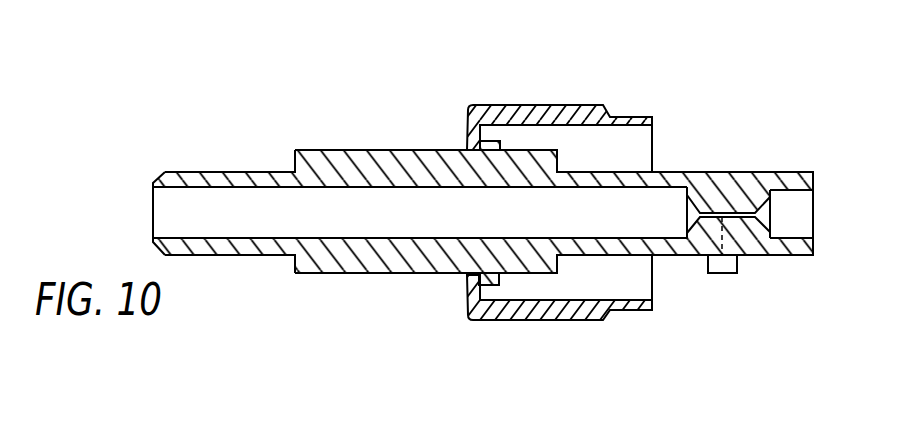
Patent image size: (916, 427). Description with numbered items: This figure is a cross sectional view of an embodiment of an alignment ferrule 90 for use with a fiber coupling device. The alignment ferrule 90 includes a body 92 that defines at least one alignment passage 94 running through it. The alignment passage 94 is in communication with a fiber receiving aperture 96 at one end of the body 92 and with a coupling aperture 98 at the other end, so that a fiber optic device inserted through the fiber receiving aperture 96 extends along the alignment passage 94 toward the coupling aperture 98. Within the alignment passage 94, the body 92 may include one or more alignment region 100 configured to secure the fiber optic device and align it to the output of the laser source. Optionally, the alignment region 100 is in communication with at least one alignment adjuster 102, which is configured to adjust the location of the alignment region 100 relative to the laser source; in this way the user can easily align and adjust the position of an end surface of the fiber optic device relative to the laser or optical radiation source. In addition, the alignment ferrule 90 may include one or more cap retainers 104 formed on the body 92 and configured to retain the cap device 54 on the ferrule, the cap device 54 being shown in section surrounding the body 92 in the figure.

The alignment ferrule 90 is at (884, 117).
The body 92 is at (373, 162).
The alignment passage 94 is at (285, 212).
The fiber receiving aperture 96 is at (177, 205).
The coupling aperture 98 is at (802, 215).
The alignment region 100 is at (711, 213).
The alignment adjuster 102 is at (722, 273).
The cap retainer 104 is at (492, 147).
The cap device 54 is at (550, 105).